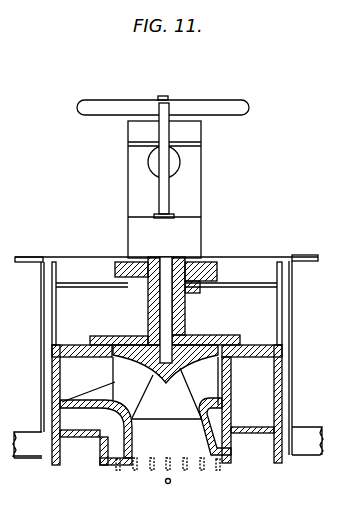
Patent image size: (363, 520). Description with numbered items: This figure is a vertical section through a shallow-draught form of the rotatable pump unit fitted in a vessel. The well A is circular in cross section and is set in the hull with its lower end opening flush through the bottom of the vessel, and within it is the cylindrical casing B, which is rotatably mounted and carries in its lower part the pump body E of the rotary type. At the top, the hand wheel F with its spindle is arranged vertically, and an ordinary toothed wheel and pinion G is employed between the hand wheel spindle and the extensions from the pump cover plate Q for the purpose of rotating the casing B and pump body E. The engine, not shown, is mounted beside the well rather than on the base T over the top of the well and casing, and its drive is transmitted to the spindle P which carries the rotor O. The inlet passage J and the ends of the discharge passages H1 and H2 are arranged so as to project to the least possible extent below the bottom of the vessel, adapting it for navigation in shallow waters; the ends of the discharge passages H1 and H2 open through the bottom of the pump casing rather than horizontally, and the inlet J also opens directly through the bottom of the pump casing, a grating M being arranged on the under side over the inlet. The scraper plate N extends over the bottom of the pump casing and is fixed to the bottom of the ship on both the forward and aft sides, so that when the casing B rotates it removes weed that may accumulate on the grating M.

The hand wheel F is at (108, 102).
The base T is at (128, 183).
The toothed wheel and pinion G is at (112, 258).
The well A is at (41, 306).
The cylindrical casing B is at (52, 323).
The spindle P is at (165, 316).
The pump cover plate Q is at (190, 316).
The pump body E is at (55, 353).
The discharge passage H2 is at (66, 385).
The rotor O is at (62, 405).
The inlet passage J is at (192, 440).
The discharge passage H1 is at (250, 452).
The grating M is at (118, 470).
The scraper plate N is at (169, 483).